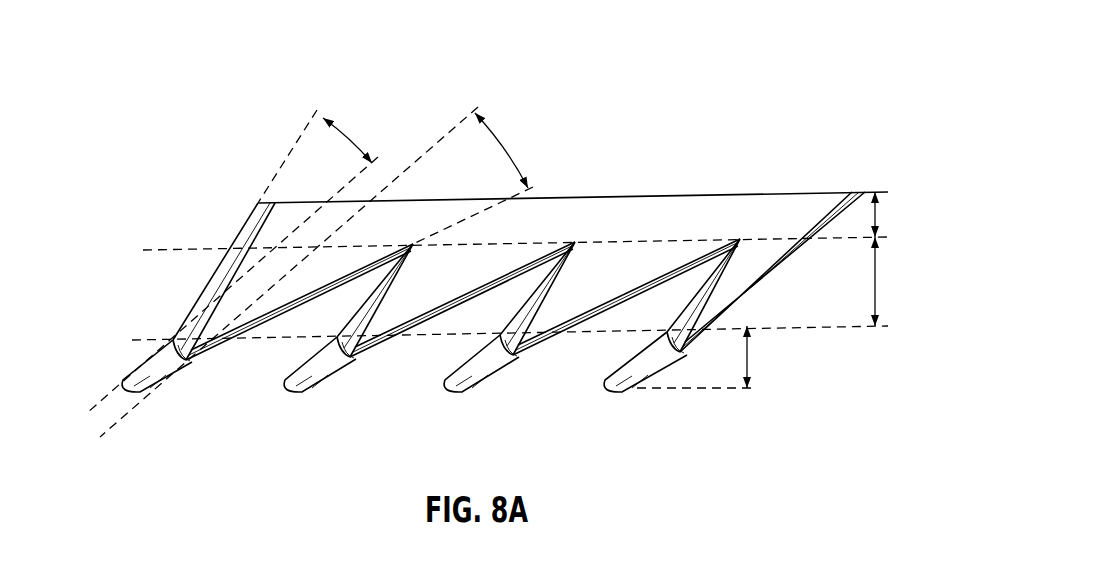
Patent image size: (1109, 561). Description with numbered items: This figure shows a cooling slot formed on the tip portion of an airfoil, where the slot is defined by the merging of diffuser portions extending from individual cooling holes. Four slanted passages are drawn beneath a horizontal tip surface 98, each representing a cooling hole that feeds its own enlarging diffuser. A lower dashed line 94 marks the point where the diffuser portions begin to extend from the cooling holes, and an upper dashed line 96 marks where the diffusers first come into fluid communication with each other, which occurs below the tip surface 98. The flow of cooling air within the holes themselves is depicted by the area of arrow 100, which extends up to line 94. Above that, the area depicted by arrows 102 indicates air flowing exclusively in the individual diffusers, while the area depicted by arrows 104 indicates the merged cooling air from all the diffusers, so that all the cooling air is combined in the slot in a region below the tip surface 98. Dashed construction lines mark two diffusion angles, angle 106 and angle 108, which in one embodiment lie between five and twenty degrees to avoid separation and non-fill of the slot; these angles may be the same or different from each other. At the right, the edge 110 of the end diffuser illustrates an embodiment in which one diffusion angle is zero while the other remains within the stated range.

The line 94 is at (793, 326).
The line 96 is at (653, 240).
The tip surface 98 is at (655, 195).
The arrow 100 is at (748, 350).
The arrows 102 is at (878, 272).
The arrows 104 is at (880, 208).
The diffusion angle 106 is at (350, 136).
The diffusion angle 108 is at (505, 148).
The edge 110 is at (785, 260).